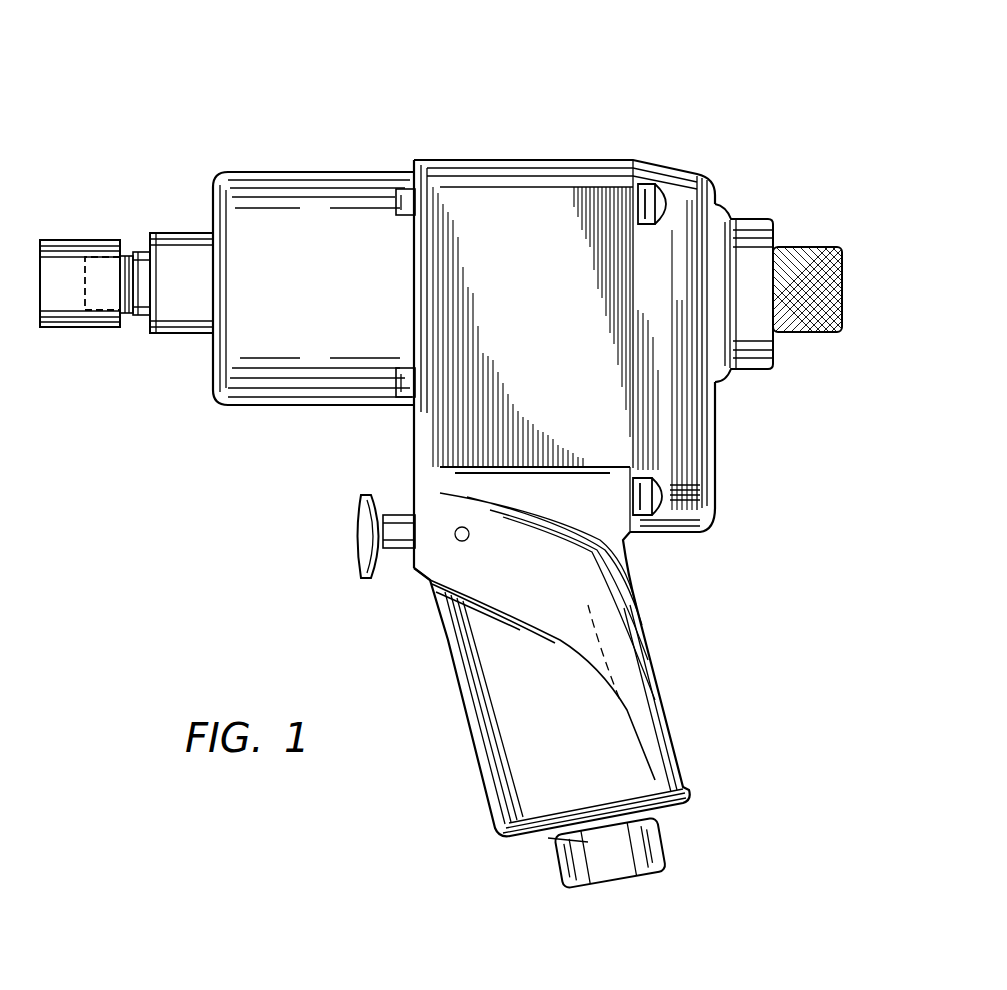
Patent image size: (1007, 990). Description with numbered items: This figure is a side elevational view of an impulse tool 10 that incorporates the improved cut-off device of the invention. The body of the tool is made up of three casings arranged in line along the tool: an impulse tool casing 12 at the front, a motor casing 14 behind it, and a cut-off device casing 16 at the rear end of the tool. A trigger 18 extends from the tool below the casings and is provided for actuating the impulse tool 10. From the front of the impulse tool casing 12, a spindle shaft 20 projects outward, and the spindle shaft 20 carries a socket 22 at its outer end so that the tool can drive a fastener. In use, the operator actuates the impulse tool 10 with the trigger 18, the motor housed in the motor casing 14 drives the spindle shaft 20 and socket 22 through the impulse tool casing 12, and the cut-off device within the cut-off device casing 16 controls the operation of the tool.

The impulse tool 10 is at (735, 88).
The impulse tool casing 12 is at (313, 187).
The motor casing 14 is at (517, 192).
The cut-off device casing 16 is at (684, 185).
The trigger 18 is at (362, 522).
The spindle shaft 20 is at (126, 256).
The socket 22 is at (71, 257).